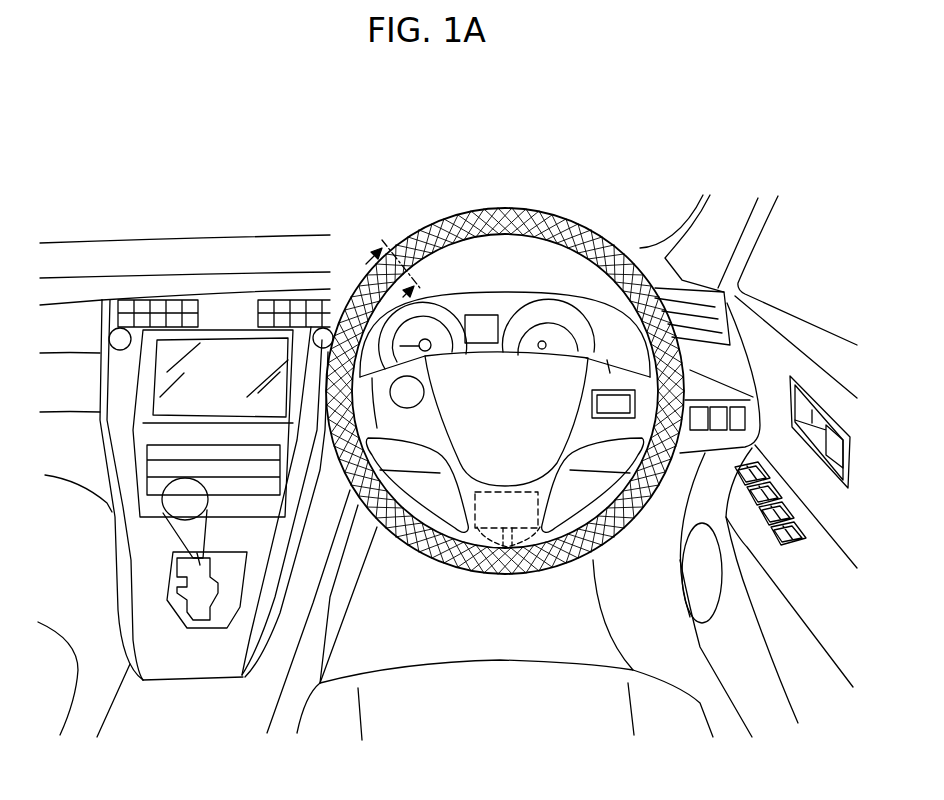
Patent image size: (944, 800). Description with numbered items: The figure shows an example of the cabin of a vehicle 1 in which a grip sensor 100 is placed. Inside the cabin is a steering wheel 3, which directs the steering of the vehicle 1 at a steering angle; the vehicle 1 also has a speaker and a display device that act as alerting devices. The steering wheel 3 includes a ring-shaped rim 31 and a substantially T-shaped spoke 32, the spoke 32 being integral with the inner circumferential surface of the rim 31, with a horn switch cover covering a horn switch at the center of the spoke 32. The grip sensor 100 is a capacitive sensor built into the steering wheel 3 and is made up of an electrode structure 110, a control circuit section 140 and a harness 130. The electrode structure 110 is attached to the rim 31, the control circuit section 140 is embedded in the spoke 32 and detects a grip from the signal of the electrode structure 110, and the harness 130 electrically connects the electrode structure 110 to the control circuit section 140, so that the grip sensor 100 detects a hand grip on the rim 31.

The vehicle 1 is at (545, 129).
The steering wheel 3 is at (505, 358).
The rim 31 is at (505, 358).
The spoke 32 is at (582, 178).
The grip sensor 100 is at (502, 212).
The electrode structure 110 is at (505, 358).
The harness 130 is at (530, 575).
The control circuit section 140 is at (467, 575).